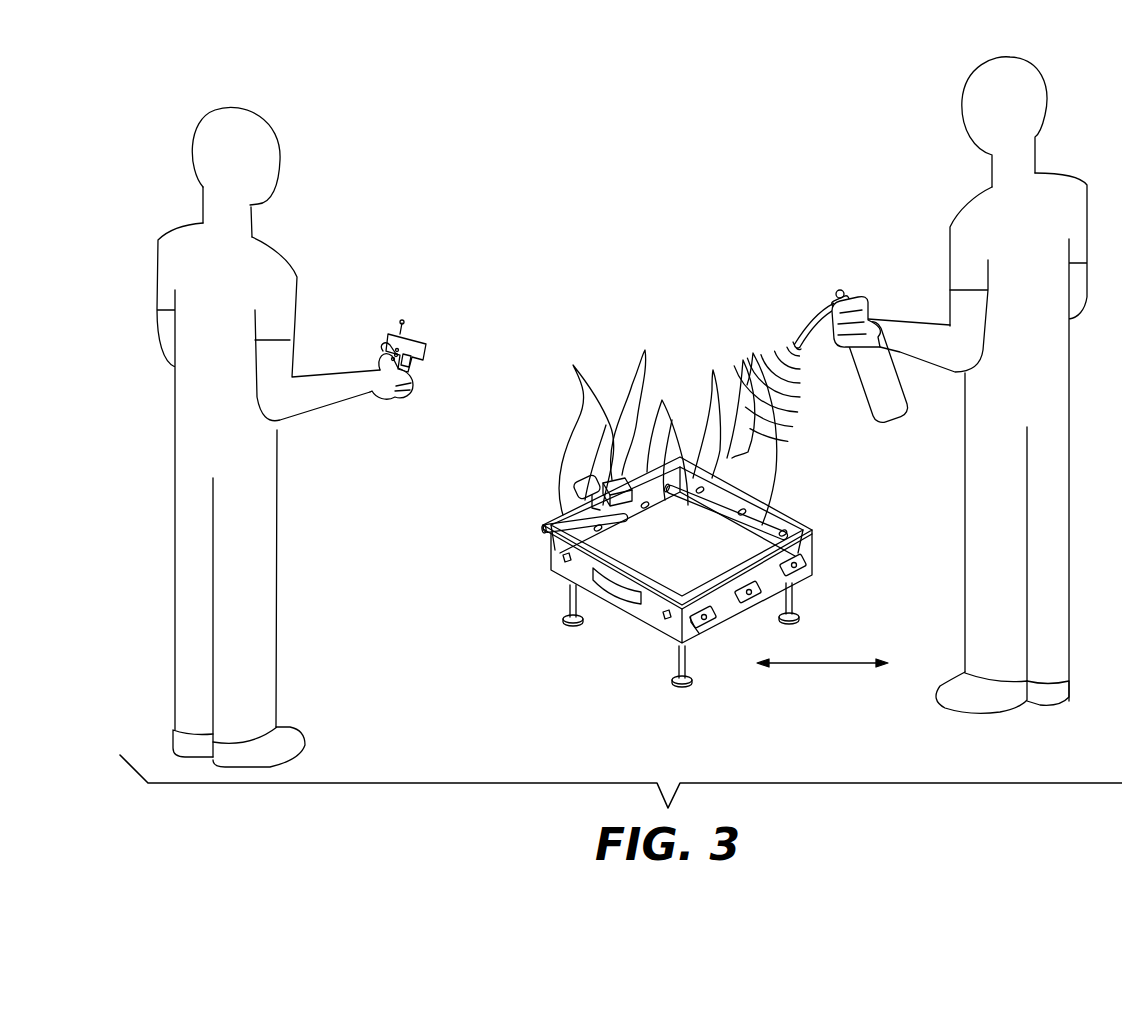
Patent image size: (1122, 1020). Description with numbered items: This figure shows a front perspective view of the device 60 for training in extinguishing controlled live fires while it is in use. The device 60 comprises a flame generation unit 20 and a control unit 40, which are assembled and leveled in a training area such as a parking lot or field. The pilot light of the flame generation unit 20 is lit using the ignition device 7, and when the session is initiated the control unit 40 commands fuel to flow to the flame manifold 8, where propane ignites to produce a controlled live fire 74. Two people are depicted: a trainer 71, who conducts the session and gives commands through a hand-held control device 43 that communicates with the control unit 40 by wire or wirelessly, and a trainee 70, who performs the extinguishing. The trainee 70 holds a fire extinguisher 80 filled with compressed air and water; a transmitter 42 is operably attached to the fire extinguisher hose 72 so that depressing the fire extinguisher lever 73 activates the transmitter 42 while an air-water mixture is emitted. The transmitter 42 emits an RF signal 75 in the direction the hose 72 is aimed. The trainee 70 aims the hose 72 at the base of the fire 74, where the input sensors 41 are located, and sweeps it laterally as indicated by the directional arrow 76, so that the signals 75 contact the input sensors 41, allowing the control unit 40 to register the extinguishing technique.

The ignition device 7 is at (610, 487).
The flame manifold 8 is at (707, 510).
The flame generation unit 20 is at (727, 531).
The control unit 40 is at (595, 607).
The input sensors 41 is at (705, 620).
The transmitter 42 is at (795, 343).
The hand-held control device 43 is at (413, 343).
The device for training in extinguishing fires 60 is at (635, 427).
The trainee 70 is at (905, 385).
The trainer 71 is at (306, 437).
The fire extinguisher hose 72 is at (813, 318).
The fire extinguisher lever 73 is at (840, 290).
The controlled live fire 74 is at (578, 448).
The signal 75 is at (787, 402).
The directional arrow 76 is at (822, 663).
The fire extinguisher 80 is at (898, 412).